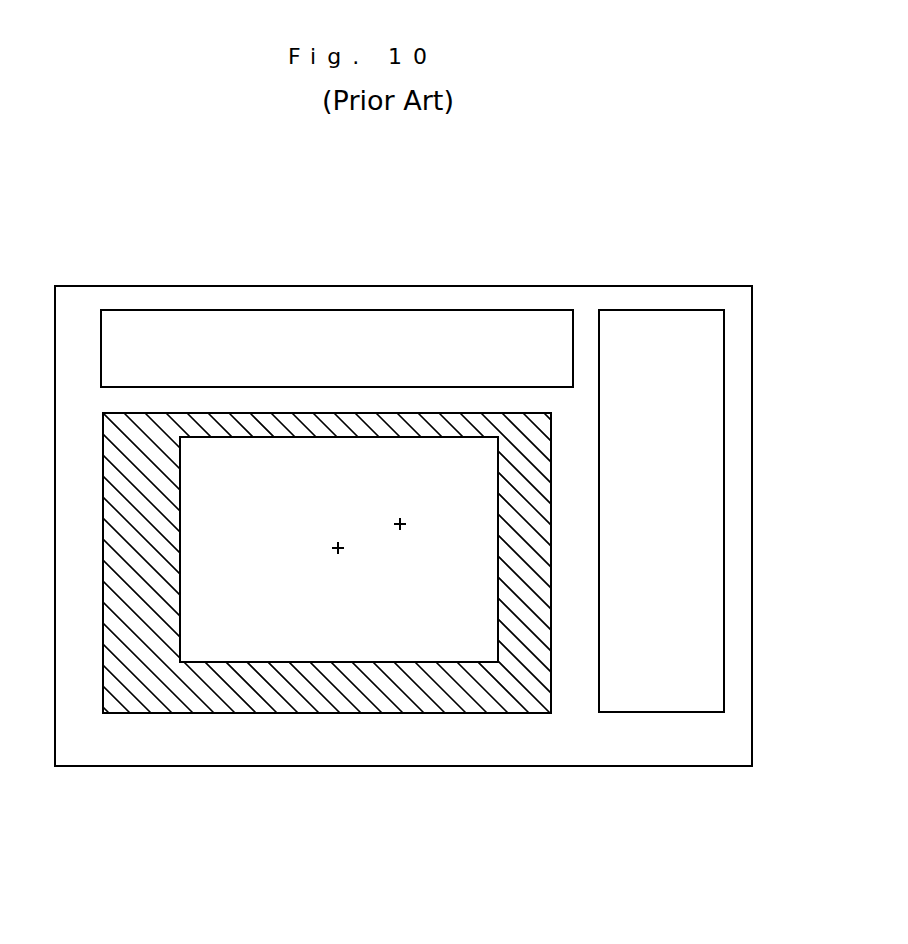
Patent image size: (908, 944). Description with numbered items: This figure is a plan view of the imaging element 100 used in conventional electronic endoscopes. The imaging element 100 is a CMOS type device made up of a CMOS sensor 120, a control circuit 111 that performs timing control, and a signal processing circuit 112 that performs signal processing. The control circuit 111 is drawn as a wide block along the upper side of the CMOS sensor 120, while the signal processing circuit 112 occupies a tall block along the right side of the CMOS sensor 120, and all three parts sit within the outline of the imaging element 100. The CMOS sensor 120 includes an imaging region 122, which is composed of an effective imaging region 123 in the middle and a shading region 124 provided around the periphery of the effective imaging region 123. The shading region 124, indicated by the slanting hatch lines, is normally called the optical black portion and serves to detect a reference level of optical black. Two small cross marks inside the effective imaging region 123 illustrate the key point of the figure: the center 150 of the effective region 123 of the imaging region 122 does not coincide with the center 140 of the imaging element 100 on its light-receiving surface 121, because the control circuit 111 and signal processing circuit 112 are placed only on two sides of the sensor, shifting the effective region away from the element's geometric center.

The imaging element 100 is at (806, 308).
The control circuit 111 is at (357, 310).
The signal processing circuit 112 is at (725, 522).
The CMOS sensor 120 is at (533, 718).
The light-receiving surface 121 is at (427, 610).
The imaging region 122 is at (133, 713).
The effective imaging region 123 is at (220, 662).
The shading region 124 is at (403, 693).
The center of the imaging element 140 is at (400, 529).
The center of the effective region 150 is at (338, 552).